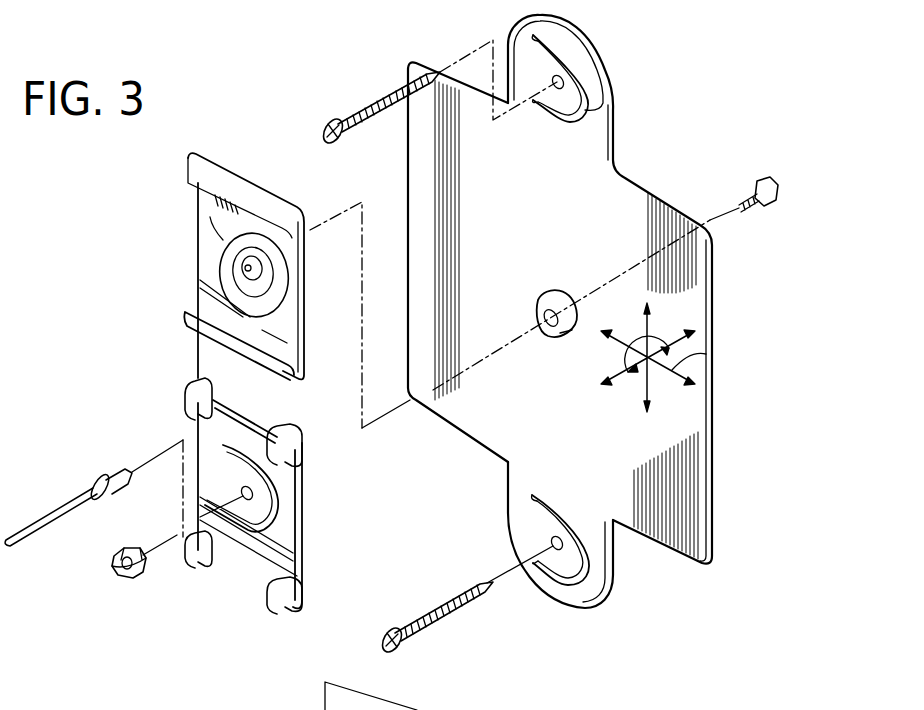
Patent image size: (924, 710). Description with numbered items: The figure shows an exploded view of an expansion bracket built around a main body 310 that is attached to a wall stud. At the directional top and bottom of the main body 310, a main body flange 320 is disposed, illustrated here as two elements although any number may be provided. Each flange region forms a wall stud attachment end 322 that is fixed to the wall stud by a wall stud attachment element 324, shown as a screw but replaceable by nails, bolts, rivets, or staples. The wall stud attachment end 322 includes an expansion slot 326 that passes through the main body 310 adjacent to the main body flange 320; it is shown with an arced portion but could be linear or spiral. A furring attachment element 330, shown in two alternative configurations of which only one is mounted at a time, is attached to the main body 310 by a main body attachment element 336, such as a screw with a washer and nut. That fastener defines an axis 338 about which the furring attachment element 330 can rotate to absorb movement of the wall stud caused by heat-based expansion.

The main body 310 is at (694, 487).
The main body flange 320 is at (597, 110).
The wall stud attachment end 322 is at (600, 57).
The wall stud attachment element 324 is at (362, 107).
The expansion slot 326 is at (587, 90).
The furring attachment element 330 is at (207, 278).
The main body attachment element 336 is at (113, 567).
The axis 338 is at (683, 361).